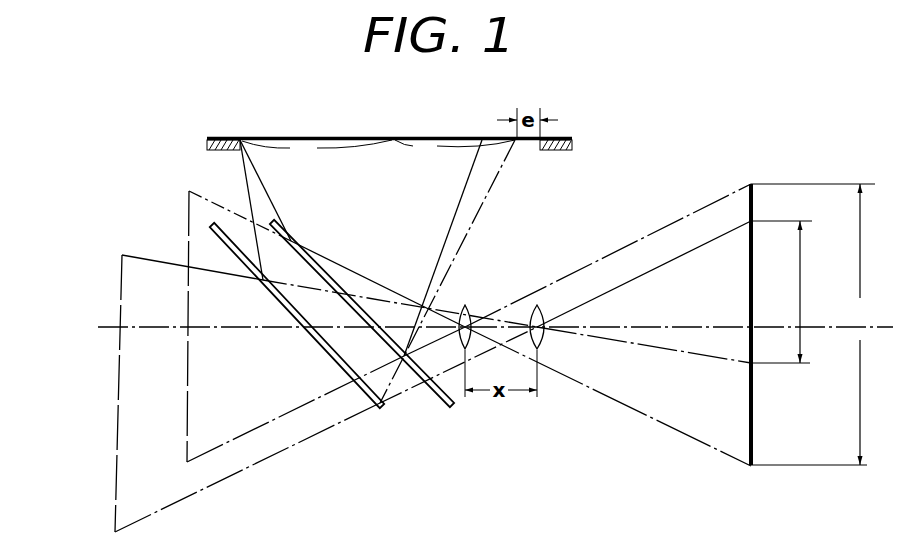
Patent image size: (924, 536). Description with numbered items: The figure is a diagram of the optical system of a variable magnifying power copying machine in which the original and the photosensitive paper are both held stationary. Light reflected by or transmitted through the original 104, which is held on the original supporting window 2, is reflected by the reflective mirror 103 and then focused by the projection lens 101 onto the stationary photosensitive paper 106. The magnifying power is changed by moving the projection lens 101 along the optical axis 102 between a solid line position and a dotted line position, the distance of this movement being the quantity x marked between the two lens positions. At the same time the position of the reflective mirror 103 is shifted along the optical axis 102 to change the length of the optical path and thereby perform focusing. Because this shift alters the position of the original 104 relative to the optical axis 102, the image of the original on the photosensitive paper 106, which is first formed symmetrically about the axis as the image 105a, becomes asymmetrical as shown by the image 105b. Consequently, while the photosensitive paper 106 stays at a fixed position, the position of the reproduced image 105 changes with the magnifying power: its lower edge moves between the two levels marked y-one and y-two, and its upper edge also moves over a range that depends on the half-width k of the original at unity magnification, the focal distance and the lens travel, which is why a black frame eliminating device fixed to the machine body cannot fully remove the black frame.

The original supporting window 2 is at (540, 148).
The projection lens 101 is at (466, 306).
The optical axis 102 is at (656, 327).
The reflective mirror 103 is at (322, 260).
The original 104 is at (393, 137).
The reproduced image 105 is at (753, 205).
The image of the original formed symmetrically 105a is at (883, 324).
The asymmetrical image 105b is at (822, 292).
The photosensitive paper 106 is at (755, 258).